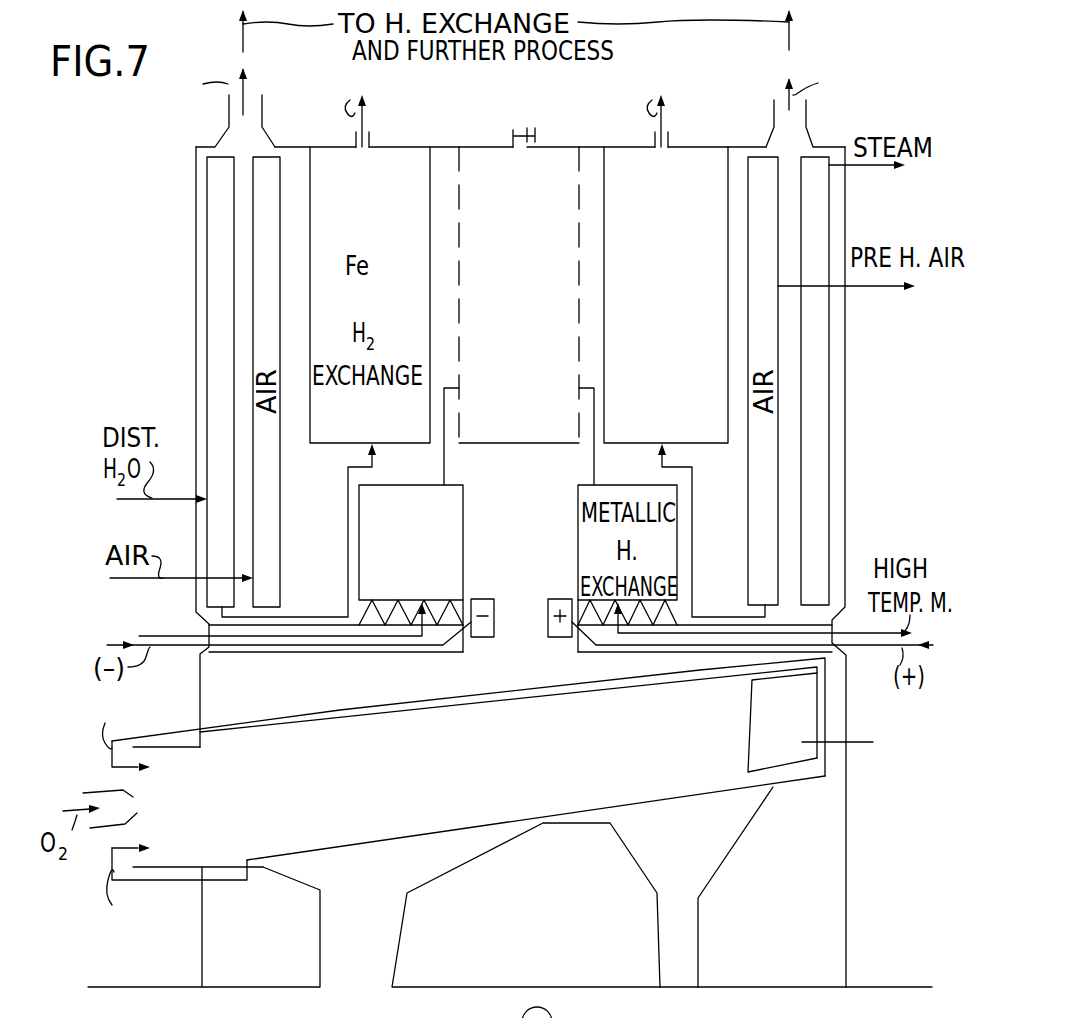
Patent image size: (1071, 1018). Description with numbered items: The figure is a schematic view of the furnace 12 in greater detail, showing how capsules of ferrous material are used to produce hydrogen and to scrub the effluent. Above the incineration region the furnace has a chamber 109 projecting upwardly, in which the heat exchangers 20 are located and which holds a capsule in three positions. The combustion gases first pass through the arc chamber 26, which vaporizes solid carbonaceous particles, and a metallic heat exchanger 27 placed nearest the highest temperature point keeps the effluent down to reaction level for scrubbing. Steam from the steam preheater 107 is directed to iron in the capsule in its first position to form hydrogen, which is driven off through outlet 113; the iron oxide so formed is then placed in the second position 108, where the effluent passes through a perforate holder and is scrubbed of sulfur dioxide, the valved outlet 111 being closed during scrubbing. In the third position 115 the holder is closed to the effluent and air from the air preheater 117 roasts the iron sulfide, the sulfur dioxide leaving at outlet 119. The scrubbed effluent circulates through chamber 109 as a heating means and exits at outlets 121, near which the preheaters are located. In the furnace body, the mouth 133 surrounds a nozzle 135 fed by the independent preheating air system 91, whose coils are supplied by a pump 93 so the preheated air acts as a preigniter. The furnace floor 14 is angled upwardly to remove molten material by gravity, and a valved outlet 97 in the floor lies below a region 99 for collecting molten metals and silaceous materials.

The heat exchangers 20 is at (194, 376).
The steam preheater 107 is at (216, 319).
The chamber 109 is at (196, 262).
The outlets 121 is at (272, 130).
The outlet 113 is at (372, 137).
The valved outlet 111 is at (512, 137).
The second position 108 is at (547, 175).
The third position 115 is at (708, 163).
The outlet 119 is at (670, 133).
The air preheater 117 is at (830, 338).
The metallic heat exchanger 27 is at (467, 525).
The arc chamber 26 is at (494, 610).
The furnace 12 is at (580, 762).
The preheating air system 91 is at (408, 695).
The mouth 133 is at (125, 778).
The nozzle 135 is at (97, 833).
The furnace floor 14 is at (420, 885).
The region 99 is at (687, 872).
The valved outlet 97 is at (678, 982).
The pump 93 is at (582, 1014).